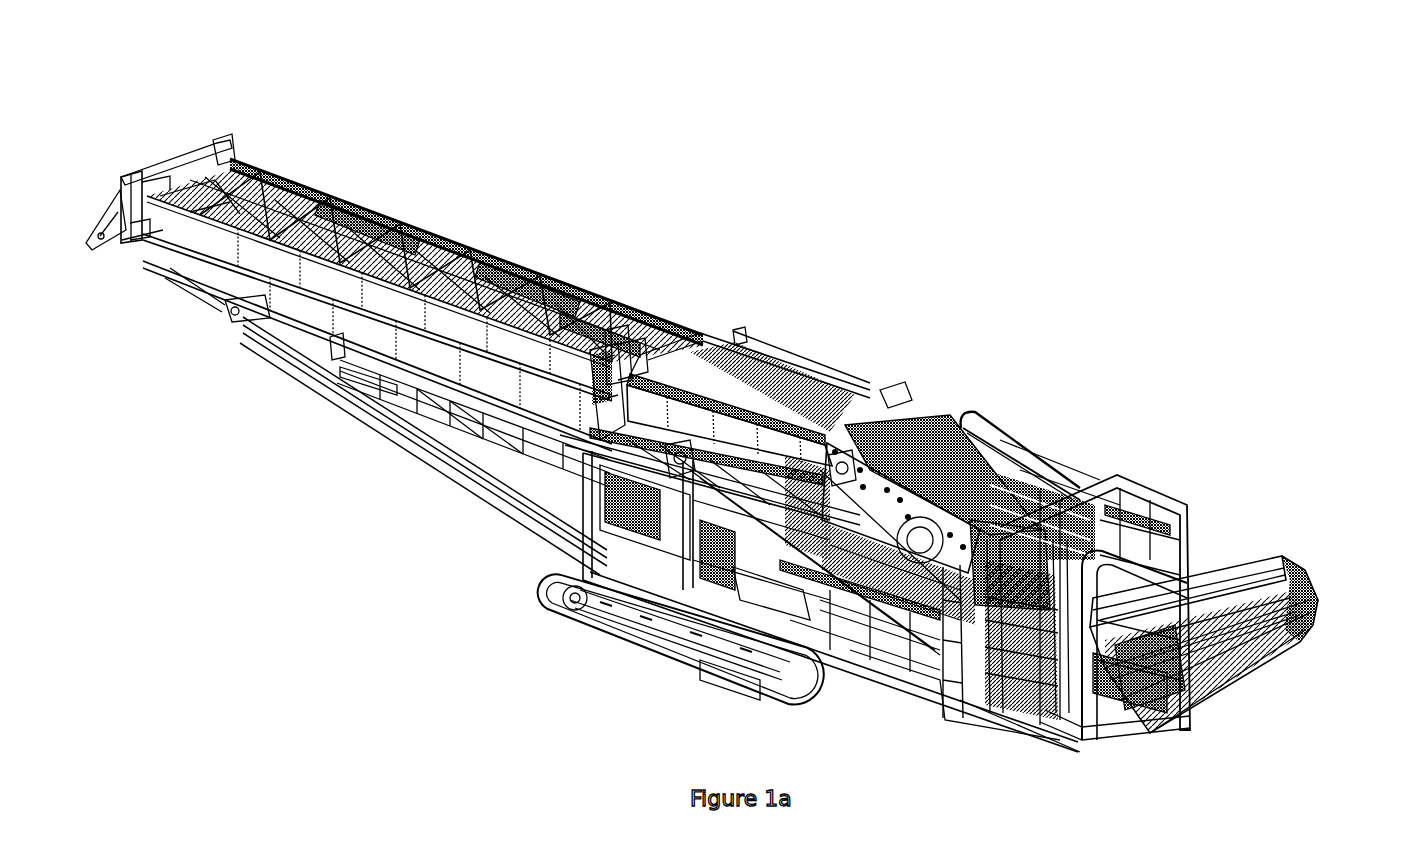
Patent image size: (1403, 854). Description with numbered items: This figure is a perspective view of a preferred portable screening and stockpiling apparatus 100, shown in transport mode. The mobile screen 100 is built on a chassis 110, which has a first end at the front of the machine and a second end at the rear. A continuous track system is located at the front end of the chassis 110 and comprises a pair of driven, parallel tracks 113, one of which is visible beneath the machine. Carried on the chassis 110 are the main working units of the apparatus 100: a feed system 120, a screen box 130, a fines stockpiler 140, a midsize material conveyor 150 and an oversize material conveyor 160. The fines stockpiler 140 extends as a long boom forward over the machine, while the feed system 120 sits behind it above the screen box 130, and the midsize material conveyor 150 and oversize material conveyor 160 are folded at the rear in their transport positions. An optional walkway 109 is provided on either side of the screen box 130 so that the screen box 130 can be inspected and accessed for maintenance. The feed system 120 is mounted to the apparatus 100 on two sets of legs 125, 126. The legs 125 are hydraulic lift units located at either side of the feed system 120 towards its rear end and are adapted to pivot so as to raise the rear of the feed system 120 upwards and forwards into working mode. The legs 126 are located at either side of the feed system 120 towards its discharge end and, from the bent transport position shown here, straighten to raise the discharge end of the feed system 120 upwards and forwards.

The portable screening and stockpiling apparatus 100 is at (392, 122).
The walkway 109 is at (1018, 447).
The chassis 110 is at (851, 672).
The tracks 113 is at (631, 647).
The feed system 120 is at (752, 370).
The legs 125 is at (678, 455).
The legs 126 is at (840, 462).
The screen box 130 is at (937, 452).
The fines stockpiler 140 is at (492, 253).
The midsize material conveyor 150 is at (1178, 503).
The oversize material conveyor 160 is at (1282, 658).